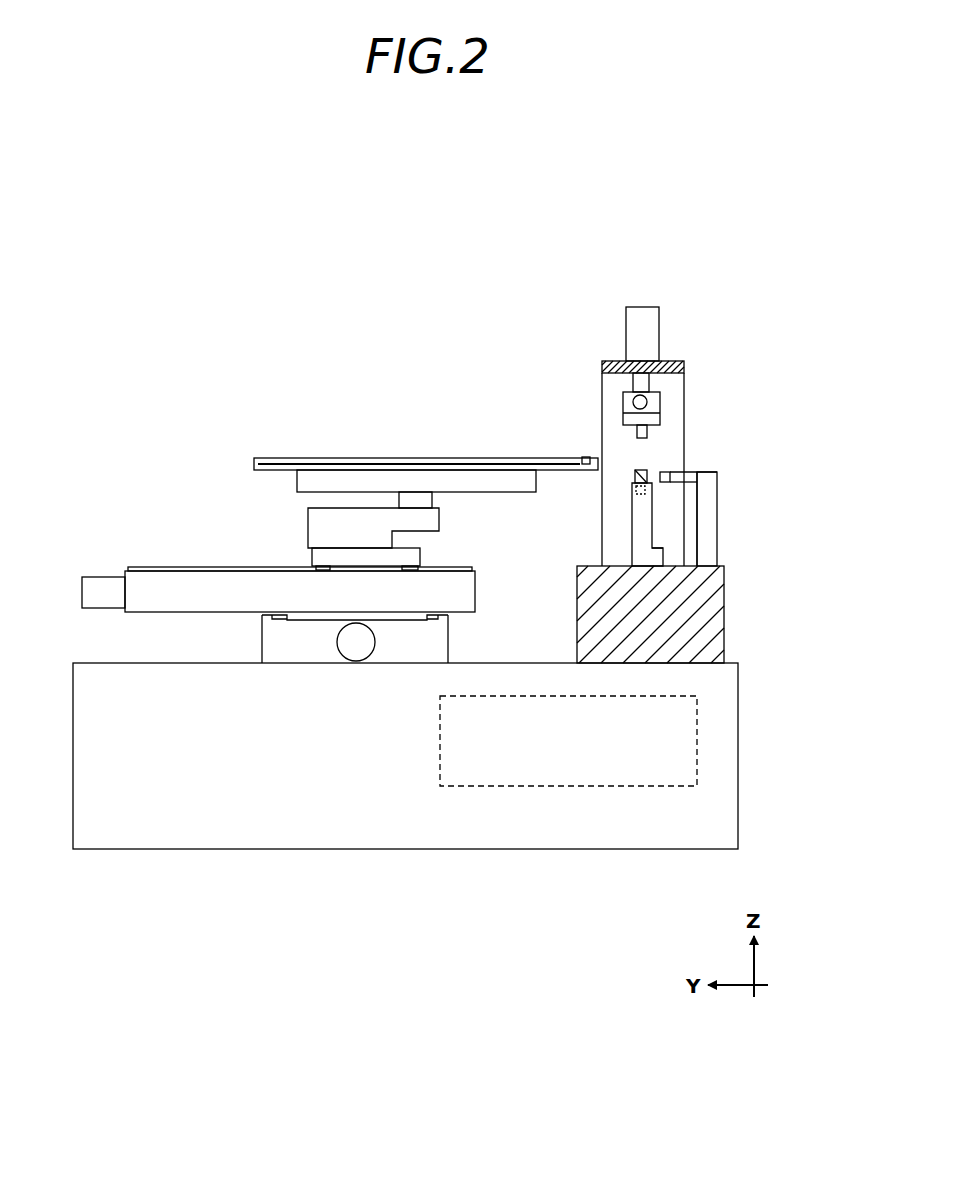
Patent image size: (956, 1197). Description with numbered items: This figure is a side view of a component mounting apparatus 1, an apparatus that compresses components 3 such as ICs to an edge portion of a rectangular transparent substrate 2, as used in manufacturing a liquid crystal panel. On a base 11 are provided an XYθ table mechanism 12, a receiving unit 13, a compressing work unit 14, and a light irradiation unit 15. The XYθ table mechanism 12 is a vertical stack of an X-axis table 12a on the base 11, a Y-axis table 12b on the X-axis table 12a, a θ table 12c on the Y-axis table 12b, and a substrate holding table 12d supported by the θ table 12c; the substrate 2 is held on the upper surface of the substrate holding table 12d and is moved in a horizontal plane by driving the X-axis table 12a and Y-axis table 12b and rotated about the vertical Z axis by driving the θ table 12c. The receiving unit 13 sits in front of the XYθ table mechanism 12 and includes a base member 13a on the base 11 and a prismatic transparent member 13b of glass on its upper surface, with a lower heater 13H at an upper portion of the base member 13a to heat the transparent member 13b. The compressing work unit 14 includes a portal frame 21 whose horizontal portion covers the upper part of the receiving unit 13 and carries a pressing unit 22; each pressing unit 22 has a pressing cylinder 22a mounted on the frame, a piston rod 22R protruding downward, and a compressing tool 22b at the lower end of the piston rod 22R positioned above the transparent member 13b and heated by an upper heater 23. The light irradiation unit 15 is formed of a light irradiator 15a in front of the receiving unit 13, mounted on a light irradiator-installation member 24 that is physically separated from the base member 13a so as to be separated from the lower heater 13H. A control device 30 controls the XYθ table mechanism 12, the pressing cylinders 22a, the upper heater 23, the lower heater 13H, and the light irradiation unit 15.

The component mounting apparatus 1 is at (390, 248).
The transparent substrate 2 is at (422, 458).
The component 3 is at (531, 441).
The base 11 is at (193, 840).
The XYθ table mechanism 12 is at (227, 532).
The X-axis table 12a is at (317, 663).
The Y-axis table 12b is at (150, 582).
The θ table 12c is at (370, 515).
The substrate holding table 12d is at (355, 444).
The receiving unit 13 is at (622, 530).
The base member 13a is at (648, 533).
The transparent member 13b is at (589, 448).
The lower heater 13H is at (635, 490).
The compressing work unit 14 is at (693, 353).
The light irradiation unit 15 is at (718, 498).
The light irradiator 15a is at (718, 490).
The portal frame 21 is at (600, 365).
The pressing unit 22 is at (636, 365).
The pressing cylinder 22a is at (652, 325).
The compressing tool 22b is at (660, 417).
The piston rod 22R is at (637, 378).
The upper heater 23 is at (646, 402).
The light irradiator-installation member 24 is at (708, 518).
The control device 30 is at (583, 773).